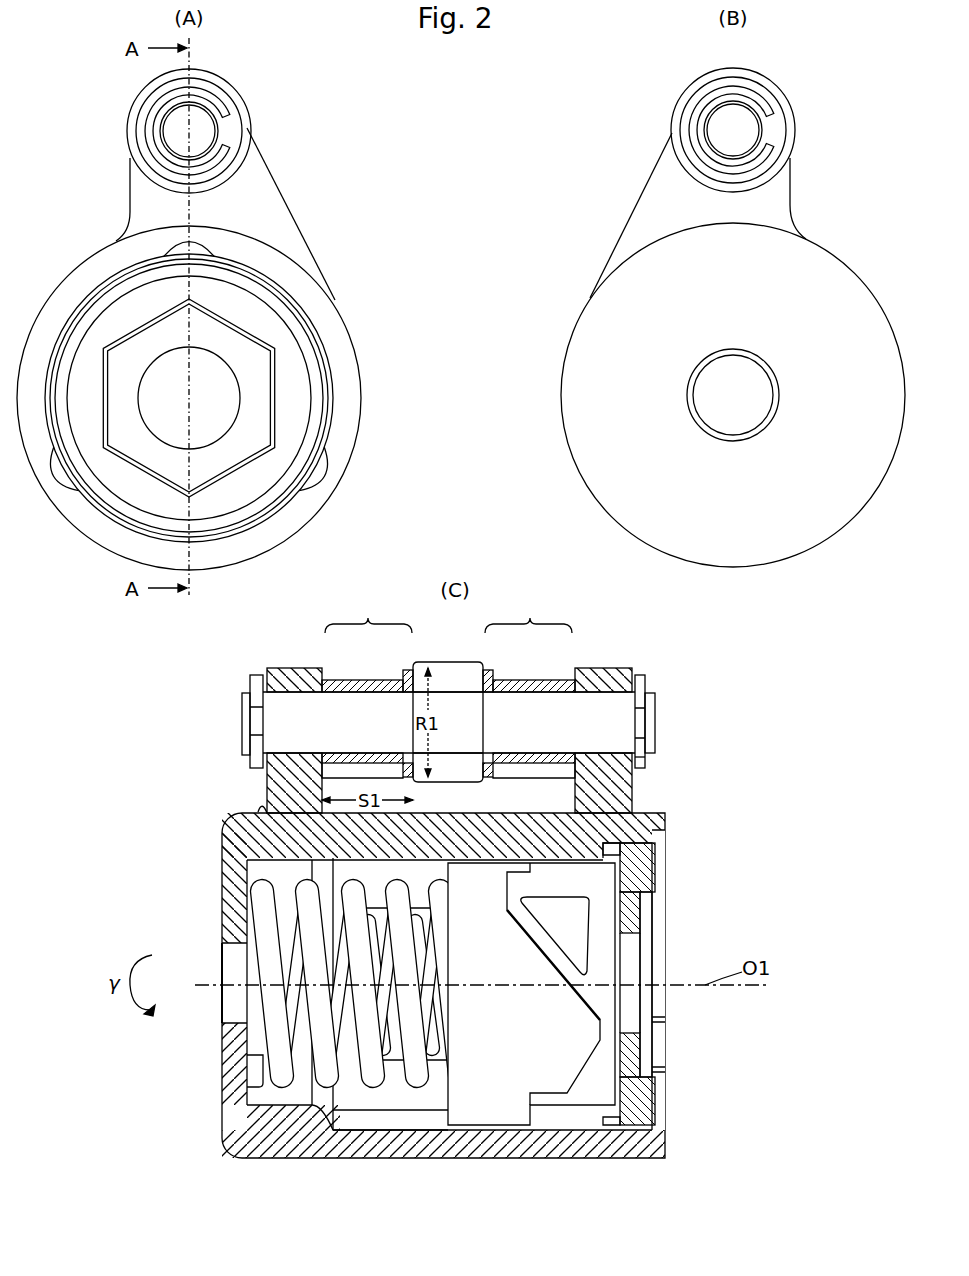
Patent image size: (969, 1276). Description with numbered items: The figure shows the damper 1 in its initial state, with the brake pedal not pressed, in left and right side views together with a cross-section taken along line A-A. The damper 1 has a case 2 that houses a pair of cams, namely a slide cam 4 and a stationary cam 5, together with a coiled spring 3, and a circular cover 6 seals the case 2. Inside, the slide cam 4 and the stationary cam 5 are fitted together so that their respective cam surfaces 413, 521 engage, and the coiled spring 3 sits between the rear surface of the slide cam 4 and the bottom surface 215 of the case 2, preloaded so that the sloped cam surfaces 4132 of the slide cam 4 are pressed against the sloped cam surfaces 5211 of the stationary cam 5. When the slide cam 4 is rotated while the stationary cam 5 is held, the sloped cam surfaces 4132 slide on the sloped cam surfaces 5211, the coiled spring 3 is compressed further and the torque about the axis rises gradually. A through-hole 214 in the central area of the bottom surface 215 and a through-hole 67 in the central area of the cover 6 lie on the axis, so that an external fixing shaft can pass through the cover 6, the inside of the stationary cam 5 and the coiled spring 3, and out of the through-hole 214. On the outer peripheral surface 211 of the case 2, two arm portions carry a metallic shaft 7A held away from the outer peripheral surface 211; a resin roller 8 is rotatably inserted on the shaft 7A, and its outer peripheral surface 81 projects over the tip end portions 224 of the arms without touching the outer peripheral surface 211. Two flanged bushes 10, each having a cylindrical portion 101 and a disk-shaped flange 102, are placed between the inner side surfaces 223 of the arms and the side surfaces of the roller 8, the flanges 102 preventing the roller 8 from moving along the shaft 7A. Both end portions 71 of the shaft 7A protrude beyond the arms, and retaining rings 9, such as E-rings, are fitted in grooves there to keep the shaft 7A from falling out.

The damper 1 is at (347, 86).
The case 2 is at (362, 393).
The outer peripheral surface 211 is at (347, 328).
The through-hole 214 is at (232, 968).
The bottom surface 215 is at (250, 877).
The inner side surface 223 is at (325, 778).
The tip end portion 224 is at (288, 668).
The coiled spring 3 is at (360, 897).
The slide cam 4 is at (447, 1095).
The cam surface 413 is at (603, 1067).
The sloped cam surfaces 4132 is at (587, 1007).
The stationary cam 5 is at (422, 897).
The cam surface 521 is at (595, 1035).
The sloped cam surfaces 5211 is at (528, 947).
The cover 6 is at (268, 308).
The through-hole 67 is at (637, 975).
The shaft 7A is at (230, 122).
The end portions 71 is at (245, 690).
The roller 8 is at (233, 80).
The outer peripheral surface 81 is at (450, 662).
The retaining rings 9 is at (150, 163).
The flanged bushes 10 is at (448, 616).
The cylindrical portion 101 is at (372, 682).
The flange 102 is at (402, 670).